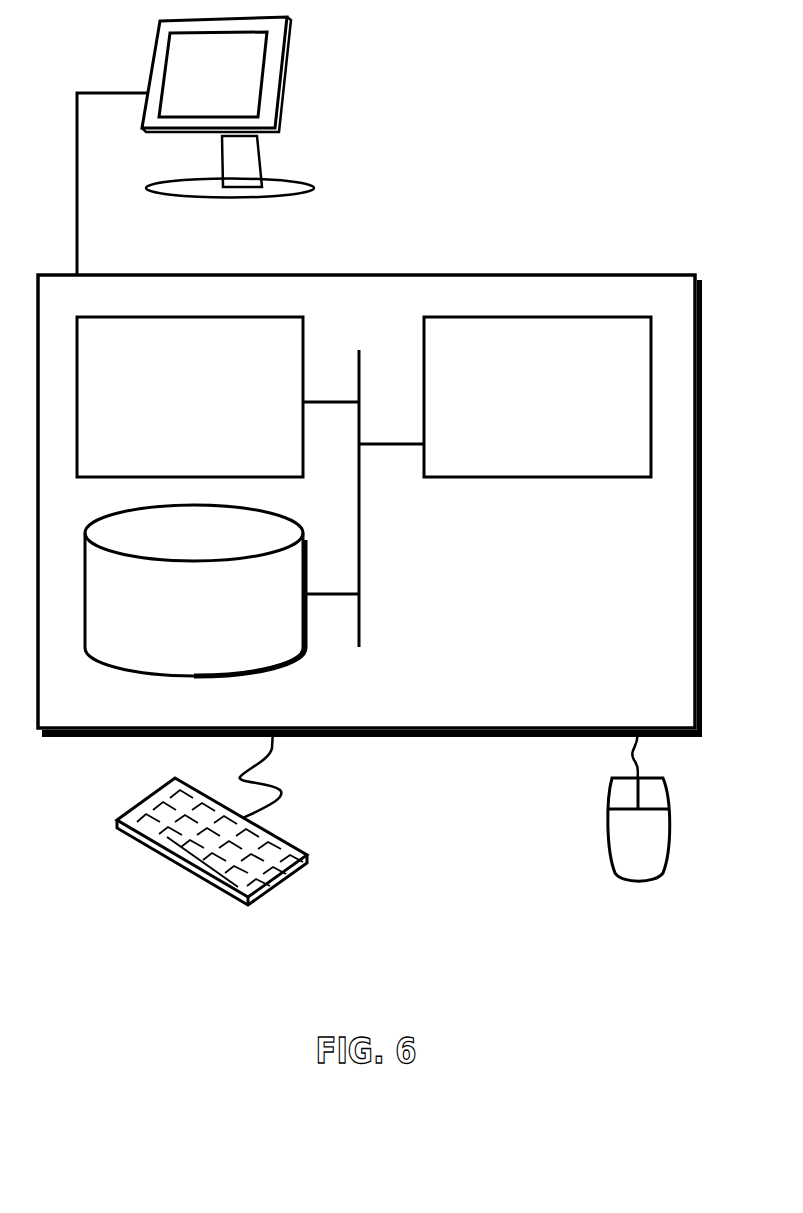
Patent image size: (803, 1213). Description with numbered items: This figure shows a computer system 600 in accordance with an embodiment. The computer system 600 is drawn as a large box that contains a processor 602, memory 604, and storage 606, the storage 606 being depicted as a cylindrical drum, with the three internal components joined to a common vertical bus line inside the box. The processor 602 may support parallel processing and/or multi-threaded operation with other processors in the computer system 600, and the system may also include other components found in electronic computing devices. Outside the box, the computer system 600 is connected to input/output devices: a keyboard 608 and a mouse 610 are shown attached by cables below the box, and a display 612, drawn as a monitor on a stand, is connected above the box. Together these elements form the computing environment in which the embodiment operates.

The computer system 600 is at (414, 243).
The processor 602 is at (519, 410).
The memory 604 is at (169, 409).
The storage 606 is at (176, 620).
The keyboard 608 is at (137, 838).
The mouse 610 is at (617, 850).
The display 612 is at (195, 146).